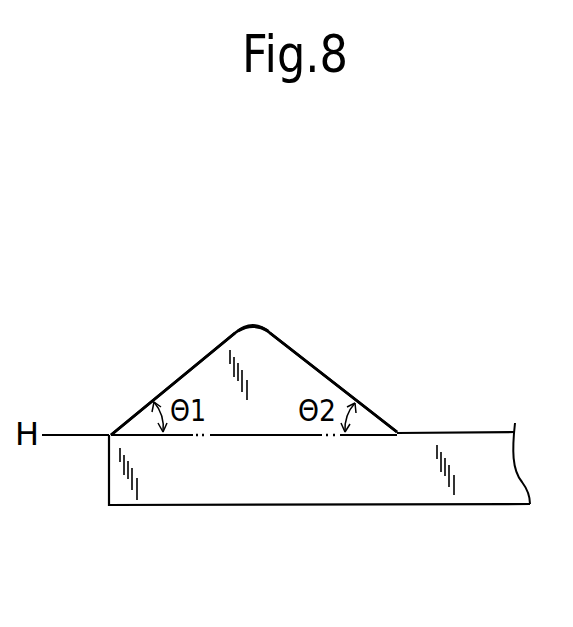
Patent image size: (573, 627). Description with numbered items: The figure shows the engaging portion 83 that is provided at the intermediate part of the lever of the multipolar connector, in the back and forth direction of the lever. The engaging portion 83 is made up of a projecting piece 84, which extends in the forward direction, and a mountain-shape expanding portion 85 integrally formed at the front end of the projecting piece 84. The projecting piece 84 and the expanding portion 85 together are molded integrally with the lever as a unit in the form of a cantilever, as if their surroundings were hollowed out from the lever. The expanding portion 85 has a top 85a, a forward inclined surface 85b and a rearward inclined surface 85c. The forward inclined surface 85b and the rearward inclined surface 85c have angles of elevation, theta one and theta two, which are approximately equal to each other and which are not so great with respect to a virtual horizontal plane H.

The engaging portion 83 is at (417, 355).
The projecting piece 84 is at (477, 498).
The expanding portion 85 is at (255, 418).
The top 85a is at (251, 325).
The forward inclined surface 85b is at (183, 365).
The rearward inclined surface 85c is at (340, 362).